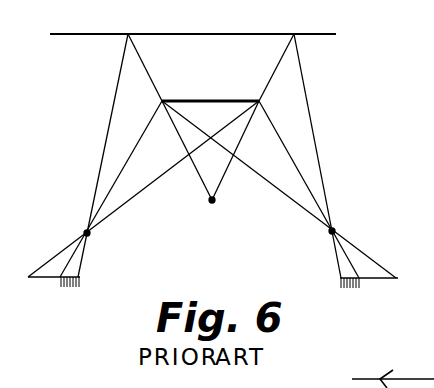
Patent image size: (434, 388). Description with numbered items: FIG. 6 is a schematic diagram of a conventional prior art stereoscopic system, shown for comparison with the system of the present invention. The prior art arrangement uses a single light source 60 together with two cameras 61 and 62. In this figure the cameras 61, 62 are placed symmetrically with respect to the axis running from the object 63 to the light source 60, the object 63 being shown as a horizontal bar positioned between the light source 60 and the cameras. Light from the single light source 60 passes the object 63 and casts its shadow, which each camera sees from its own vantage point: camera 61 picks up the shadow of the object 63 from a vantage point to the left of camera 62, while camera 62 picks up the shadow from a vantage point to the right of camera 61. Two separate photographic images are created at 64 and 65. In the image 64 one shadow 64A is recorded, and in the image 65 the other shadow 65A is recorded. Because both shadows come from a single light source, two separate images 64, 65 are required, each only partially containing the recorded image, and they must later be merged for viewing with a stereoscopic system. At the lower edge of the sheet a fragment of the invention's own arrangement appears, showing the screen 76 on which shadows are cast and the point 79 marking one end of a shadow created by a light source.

The light source 60 is at (212, 203).
The camera 61 is at (86, 231).
The camera 62 is at (336, 228).
The object 63 is at (218, 100).
The photographic image 64 is at (47, 278).
The shadow 64A is at (70, 288).
The photographic image 65 is at (383, 279).
The shadow 65A is at (347, 289).
The screen 76 is at (359, 378).
The point 79 is at (382, 378).